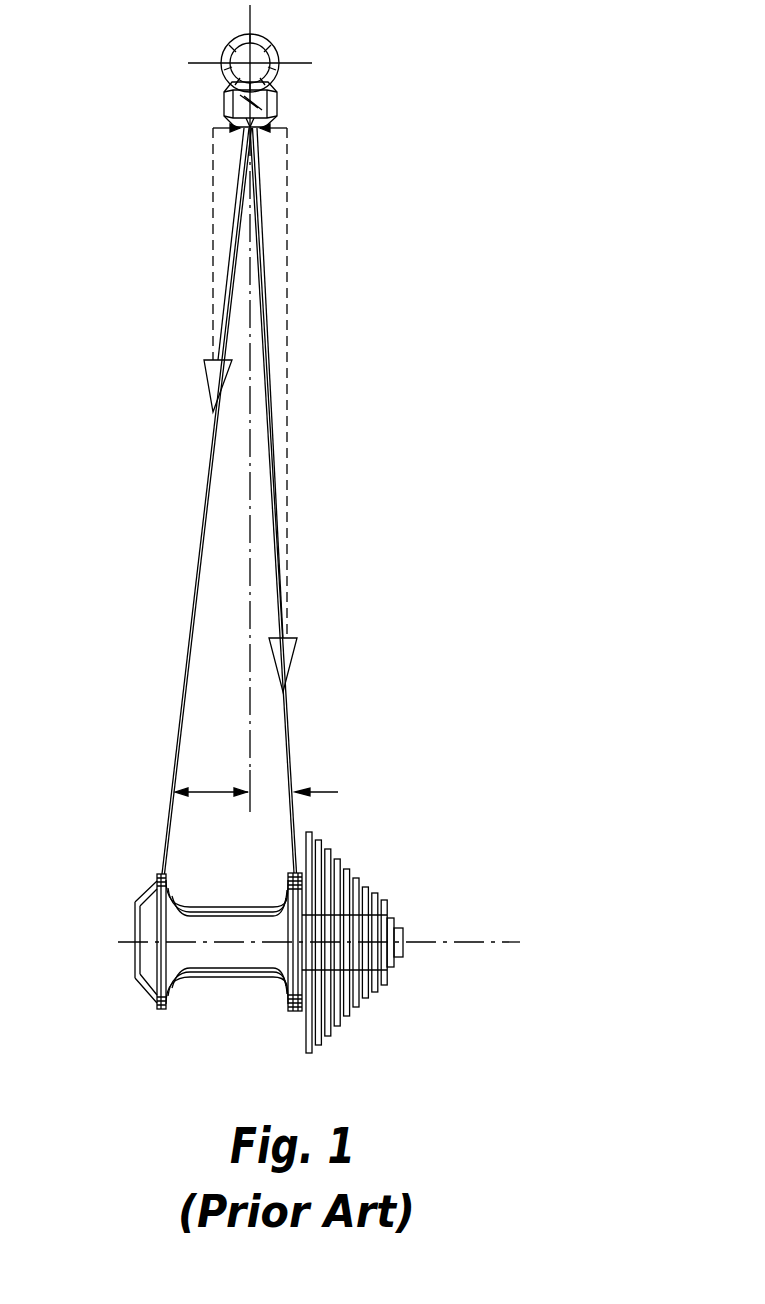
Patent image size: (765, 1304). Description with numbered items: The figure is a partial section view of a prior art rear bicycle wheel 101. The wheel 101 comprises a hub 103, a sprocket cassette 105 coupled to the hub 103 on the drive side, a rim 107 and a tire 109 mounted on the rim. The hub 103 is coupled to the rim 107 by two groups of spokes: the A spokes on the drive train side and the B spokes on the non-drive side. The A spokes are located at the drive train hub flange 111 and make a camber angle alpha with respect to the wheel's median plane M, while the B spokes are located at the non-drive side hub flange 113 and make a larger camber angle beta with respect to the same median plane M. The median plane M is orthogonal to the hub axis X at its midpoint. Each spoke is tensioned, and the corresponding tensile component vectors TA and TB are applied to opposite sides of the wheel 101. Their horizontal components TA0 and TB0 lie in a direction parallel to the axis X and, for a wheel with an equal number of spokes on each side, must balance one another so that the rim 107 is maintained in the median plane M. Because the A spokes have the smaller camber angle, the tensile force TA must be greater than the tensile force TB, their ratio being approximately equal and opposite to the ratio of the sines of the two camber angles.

The rear bicycle wheel 101 is at (284, 501).
The hub 103 is at (252, 980).
The sprocket cassette 105 is at (348, 851).
The rim 107 is at (280, 100).
The tire 109 is at (275, 48).
The drive train hub flange 111 is at (290, 1013).
The non-drive side hub flange 113 is at (158, 1012).
The drive train spokes A is at (290, 722).
The non-drive side spokes B is at (183, 678).
The median plane M is at (247, 622).
The hub axis X is at (331, 945).
The tensile component vector of A spokes TA is at (277, 465).
The tensile component vector of B spokes TB is at (232, 228).
The horizontal vector component of TA TA0 is at (257, 128).
The horizontal vector component of TB TB0 is at (243, 128).